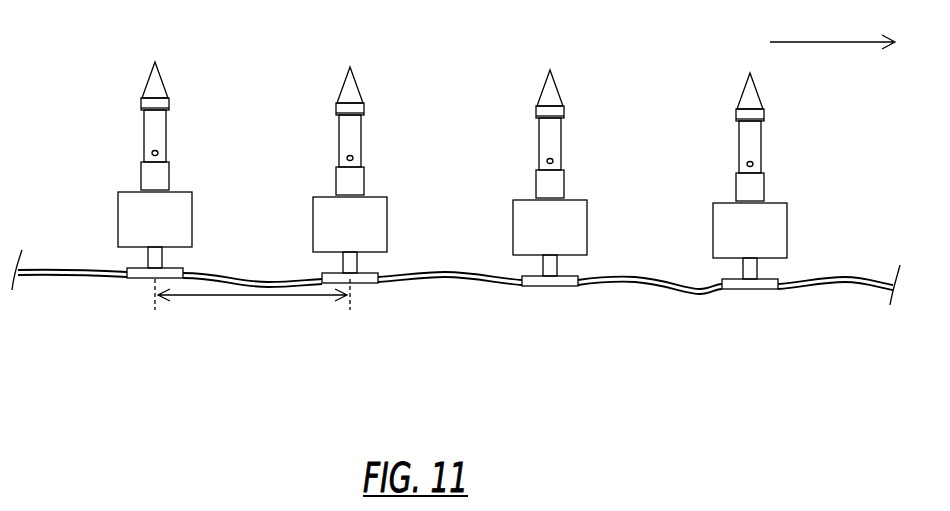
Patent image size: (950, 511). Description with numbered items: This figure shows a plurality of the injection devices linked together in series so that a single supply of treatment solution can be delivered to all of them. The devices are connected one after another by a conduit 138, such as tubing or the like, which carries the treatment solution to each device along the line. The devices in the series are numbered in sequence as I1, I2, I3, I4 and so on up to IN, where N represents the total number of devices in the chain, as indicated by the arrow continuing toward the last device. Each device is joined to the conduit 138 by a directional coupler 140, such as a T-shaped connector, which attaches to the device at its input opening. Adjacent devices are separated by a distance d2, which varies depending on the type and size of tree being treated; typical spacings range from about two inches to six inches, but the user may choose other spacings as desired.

The conduit 138 is at (62, 270).
The directional coupler 140 is at (548, 287).
The first injection device I1 is at (155, 146).
The second injection device I2 is at (350, 149).
The third injection device I3 is at (550, 150).
The fourth injection device I4 is at (750, 152).
The Nth injection device IN is at (921, 41).
The distance between devices d2 is at (252, 303).